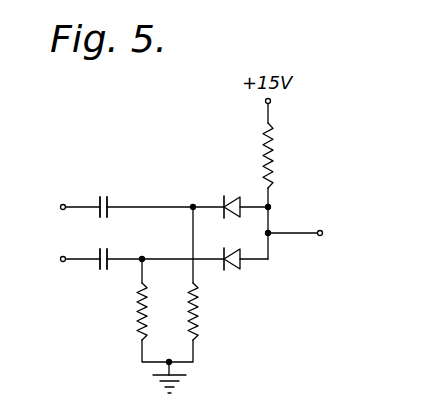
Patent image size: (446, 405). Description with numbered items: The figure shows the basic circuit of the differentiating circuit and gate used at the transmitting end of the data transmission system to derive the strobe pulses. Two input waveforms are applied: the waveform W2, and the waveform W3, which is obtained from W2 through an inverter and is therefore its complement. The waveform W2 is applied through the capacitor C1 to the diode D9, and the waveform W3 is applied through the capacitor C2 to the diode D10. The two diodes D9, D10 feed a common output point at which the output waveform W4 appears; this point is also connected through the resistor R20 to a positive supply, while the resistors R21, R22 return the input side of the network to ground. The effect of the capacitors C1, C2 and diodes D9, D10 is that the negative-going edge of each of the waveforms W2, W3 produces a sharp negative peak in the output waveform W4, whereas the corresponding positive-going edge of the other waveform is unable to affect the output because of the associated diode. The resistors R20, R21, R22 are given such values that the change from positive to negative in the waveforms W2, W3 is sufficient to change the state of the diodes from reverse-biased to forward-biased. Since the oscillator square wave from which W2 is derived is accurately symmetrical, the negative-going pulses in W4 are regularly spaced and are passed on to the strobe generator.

The capacitor C1 is at (162, 193).
The capacitor C2 is at (162, 246).
The diode D9 is at (242, 191).
The diode D10 is at (253, 271).
The resistor R20 is at (290, 155).
The resistor R21 is at (118, 311).
The resistor R22 is at (215, 311).
The waveform W2 is at (62, 207).
The waveform W3 is at (62, 259).
The output waveform W4 is at (313, 233).